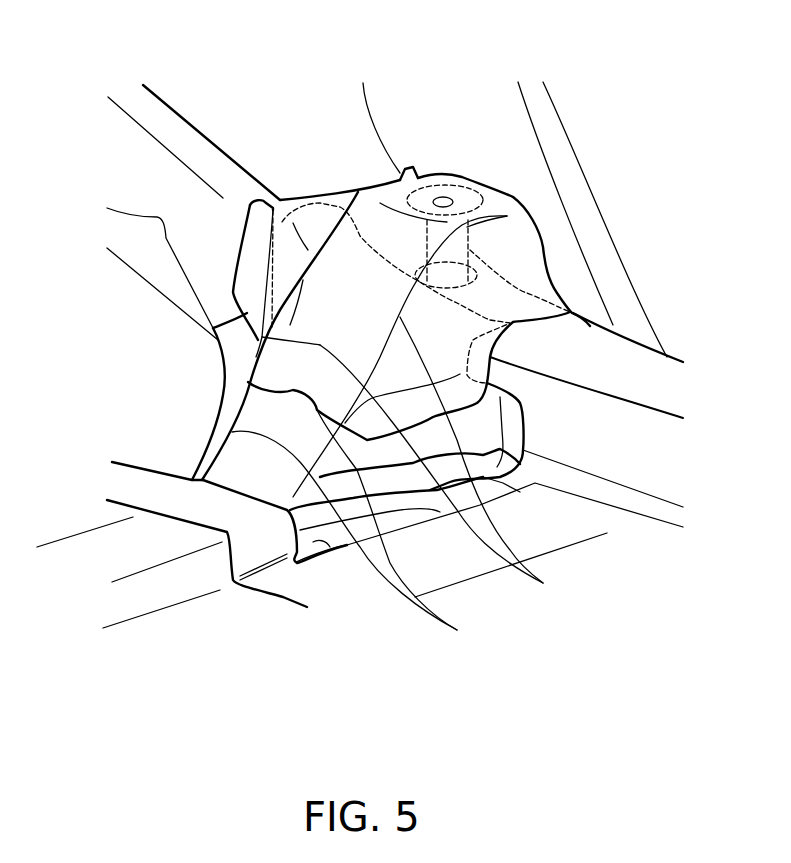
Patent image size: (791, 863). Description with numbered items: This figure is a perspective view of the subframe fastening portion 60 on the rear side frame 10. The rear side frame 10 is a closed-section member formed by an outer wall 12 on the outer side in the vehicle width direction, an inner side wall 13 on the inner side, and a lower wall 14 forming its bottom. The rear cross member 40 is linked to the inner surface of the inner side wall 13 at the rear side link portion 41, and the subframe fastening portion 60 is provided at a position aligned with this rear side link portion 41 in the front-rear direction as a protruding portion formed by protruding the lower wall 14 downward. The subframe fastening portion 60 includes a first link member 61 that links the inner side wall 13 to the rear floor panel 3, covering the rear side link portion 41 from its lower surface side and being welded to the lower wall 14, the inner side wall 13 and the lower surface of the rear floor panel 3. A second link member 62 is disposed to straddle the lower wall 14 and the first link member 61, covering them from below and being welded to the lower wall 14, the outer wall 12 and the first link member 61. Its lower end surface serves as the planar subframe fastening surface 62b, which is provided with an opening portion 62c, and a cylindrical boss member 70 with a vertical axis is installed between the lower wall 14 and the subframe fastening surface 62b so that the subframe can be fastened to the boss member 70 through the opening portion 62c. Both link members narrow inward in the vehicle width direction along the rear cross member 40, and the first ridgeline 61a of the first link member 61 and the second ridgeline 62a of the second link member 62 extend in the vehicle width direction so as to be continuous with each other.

The rear floor panel 3 is at (331, 552).
The rear side frame 10 is at (353, 134).
The outer wall 12 is at (388, 156).
The inner side wall 13 is at (207, 220).
The lower wall 14 is at (308, 110).
The rear cross member 40 is at (127, 543).
The rear side link portion 41 is at (483, 438).
The subframe fastening portion 60 is at (183, 328).
The first link member 61 is at (230, 448).
The first ridgeline 61a is at (419, 530).
The second link member 62 is at (517, 247).
The second ridgeline 62a is at (460, 465).
The subframe fastening surface 62b is at (450, 174).
The opening portion 62c is at (450, 201).
The boss member 70 is at (462, 186).